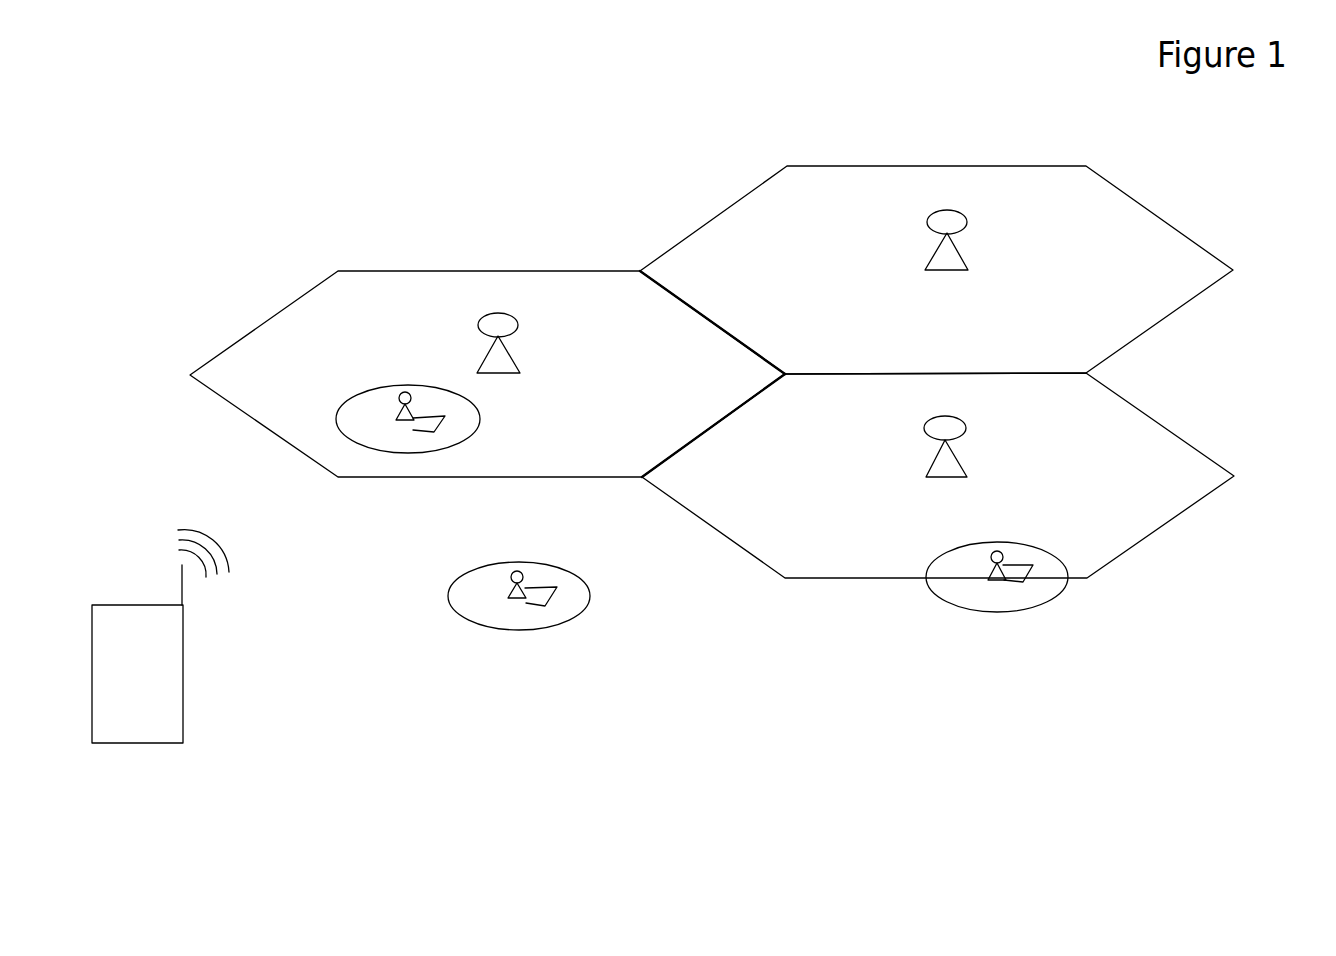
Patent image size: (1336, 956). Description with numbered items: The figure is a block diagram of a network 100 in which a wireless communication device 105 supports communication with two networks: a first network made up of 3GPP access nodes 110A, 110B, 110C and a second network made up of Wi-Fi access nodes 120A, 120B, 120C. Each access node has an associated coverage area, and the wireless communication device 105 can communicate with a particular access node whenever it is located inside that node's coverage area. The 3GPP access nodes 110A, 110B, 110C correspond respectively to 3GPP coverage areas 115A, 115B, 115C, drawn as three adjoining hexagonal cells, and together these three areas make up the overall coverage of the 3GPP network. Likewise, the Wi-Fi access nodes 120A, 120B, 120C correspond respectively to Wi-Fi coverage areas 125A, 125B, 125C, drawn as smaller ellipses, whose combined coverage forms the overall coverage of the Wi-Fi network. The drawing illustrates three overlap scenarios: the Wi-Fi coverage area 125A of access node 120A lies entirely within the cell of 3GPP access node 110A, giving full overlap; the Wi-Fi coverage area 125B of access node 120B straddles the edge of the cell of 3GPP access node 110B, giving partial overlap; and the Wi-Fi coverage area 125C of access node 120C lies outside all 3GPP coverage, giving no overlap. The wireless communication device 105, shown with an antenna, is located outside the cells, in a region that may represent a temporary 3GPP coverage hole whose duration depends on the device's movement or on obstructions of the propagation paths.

The network 100 is at (1221, 755).
The wireless communication device 105 is at (167, 677).
The 3GPP access node 110A is at (505, 358).
The 3GPP access node 110B is at (967, 465).
The 3GPP access node 110C is at (968, 255).
The 3GPP coverage area 115A is at (372, 270).
The 3GPP coverage area 115B is at (1225, 422).
The 3GPP coverage area 115C is at (878, 164).
The Wi-Fi access node 120A is at (410, 421).
The Wi-Fi access node 120B is at (1002, 578).
The Wi-Fi access node 120C is at (521, 599).
The Wi-Fi coverage area 125A is at (364, 390).
The Wi-Fi coverage area 125B is at (934, 570).
The Wi-Fi coverage area 125C is at (456, 580).